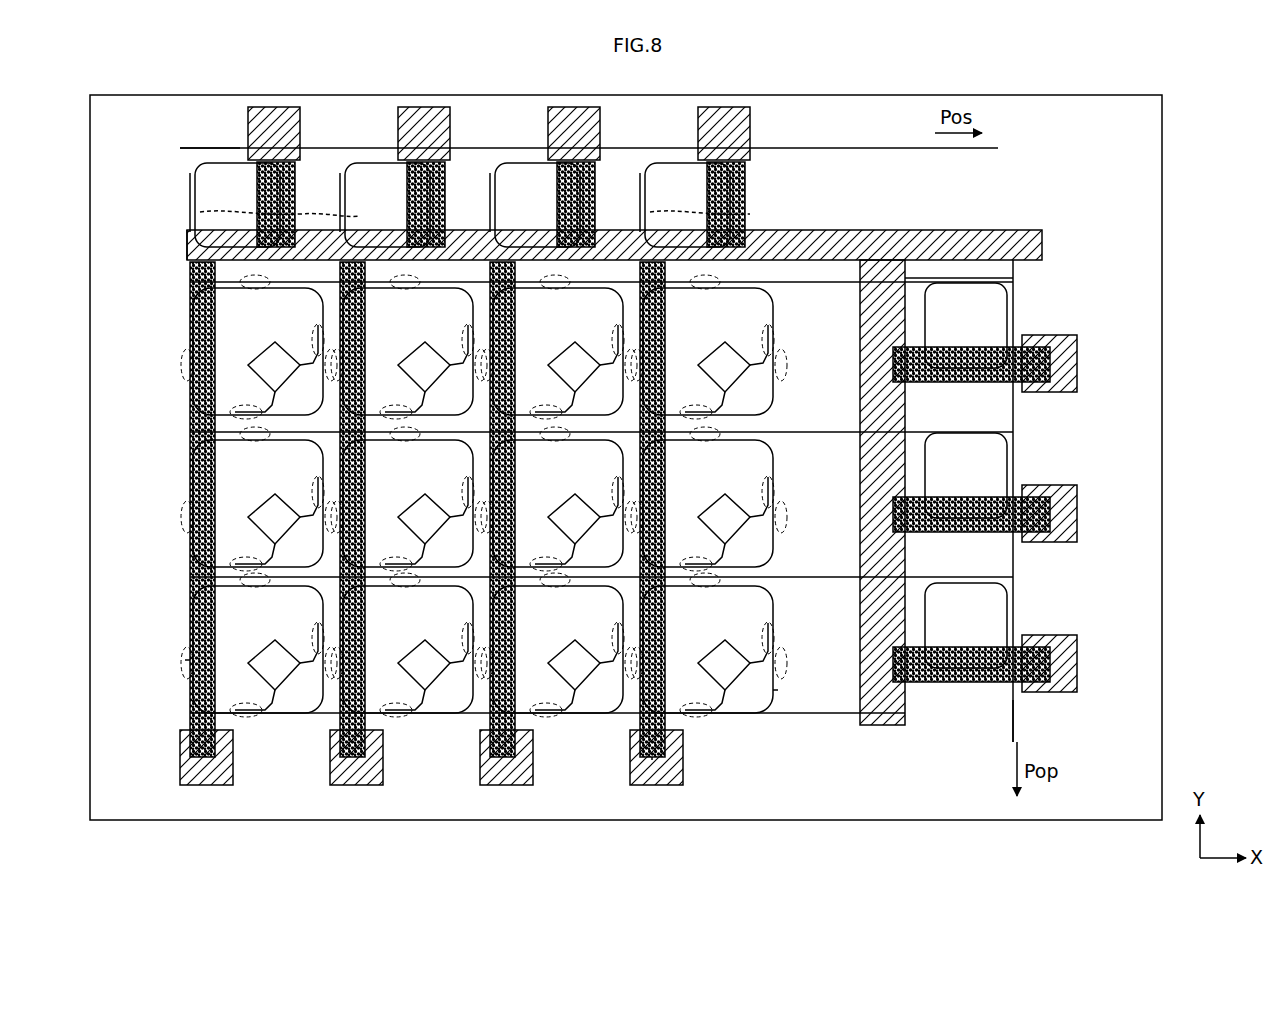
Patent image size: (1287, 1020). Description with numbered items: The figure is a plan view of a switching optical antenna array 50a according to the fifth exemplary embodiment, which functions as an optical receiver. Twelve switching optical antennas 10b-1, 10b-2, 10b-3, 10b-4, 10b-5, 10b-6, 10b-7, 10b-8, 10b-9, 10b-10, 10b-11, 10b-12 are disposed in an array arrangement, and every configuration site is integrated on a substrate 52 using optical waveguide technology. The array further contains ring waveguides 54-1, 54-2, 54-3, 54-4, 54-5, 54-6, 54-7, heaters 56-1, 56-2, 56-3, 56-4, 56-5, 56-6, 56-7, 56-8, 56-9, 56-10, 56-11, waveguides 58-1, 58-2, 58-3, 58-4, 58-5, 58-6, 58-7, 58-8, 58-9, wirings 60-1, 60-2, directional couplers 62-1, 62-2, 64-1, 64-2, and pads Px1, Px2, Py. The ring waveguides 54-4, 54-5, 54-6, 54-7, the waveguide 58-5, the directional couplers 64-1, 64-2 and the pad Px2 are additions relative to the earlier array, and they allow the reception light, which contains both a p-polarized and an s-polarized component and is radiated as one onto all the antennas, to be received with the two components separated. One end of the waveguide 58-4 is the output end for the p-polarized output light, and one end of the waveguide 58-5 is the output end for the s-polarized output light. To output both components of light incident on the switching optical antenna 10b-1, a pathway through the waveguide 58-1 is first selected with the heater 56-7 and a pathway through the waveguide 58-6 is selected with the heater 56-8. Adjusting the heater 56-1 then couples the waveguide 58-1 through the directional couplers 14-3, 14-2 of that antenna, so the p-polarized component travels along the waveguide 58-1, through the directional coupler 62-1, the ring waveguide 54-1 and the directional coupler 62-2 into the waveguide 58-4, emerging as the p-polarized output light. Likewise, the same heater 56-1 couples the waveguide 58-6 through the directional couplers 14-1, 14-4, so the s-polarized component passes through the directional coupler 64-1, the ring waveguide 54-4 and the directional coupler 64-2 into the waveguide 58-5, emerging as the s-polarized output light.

The substrate 52 is at (712, 820).
The switching optical antenna array 50a is at (880, 66).
The switching optical antenna 10b-1 is at (259, 347).
The switching optical antenna 10b-2 is at (259, 499).
The switching optical antenna 10b-3 is at (259, 645).
The switching optical antenna 10b-4 is at (409, 347).
The switching optical antenna 10b-5 is at (409, 499).
The switching optical antenna 10b-6 is at (409, 645).
The switching optical antenna 10b-7 is at (559, 347).
The switching optical antenna 10b-8 is at (559, 499).
The switching optical antenna 10b-9 is at (559, 645).
The switching optical antenna 10b-10 is at (709, 347).
The switching optical antenna 10b-11 is at (709, 499).
The switching optical antenna 10b-12 is at (709, 645).
The directional coupler 14-1 is at (668, 742).
The directional coupler 14-2 is at (720, 568).
The directional coupler 14-3 is at (770, 700).
The directional coupler 14-4 is at (188, 662).
The ring waveguide 54-1 is at (966, 325).
The ring waveguide 54-2 is at (966, 475).
The ring waveguide 54-3 is at (966, 625).
The ring waveguide 54-4 is at (237, 205).
The ring waveguide 54-5 is at (387, 205).
The ring waveguide 54-6 is at (537, 205).
The ring waveguide 54-7 is at (687, 205).
The heater 56-1 is at (195, 730).
The heater 56-2 is at (345, 730).
The heater 56-3 is at (495, 730).
The heater 56-4 is at (645, 730).
The heater 56-5 is at (965, 684).
The heater 56-6 is at (950, 534).
The heater 56-7 is at (950, 384).
The heater 56-8 is at (258, 200).
The heater 56-9 is at (200, 212).
The heater 56-10 is at (745, 192).
The heater 56-11 is at (750, 214).
The waveguide 58-1 is at (822, 284).
The waveguide 58-2 is at (822, 434).
The waveguide 58-3 is at (822, 579).
The waveguide 58-4 is at (1020, 718).
The waveguide 58-5 is at (910, 152).
The waveguide 58-6 is at (190, 186).
The waveguide 58-7 is at (340, 175).
The waveguide 58-8 is at (490, 175).
The waveguide 58-9 is at (640, 175).
The wiring 60-1 is at (968, 230).
The wiring 60-2 is at (885, 727).
The directional coupler 62-1 is at (1015, 270).
The directional coupler 62-2 is at (1015, 302).
The directional coupler 64-1 is at (185, 245).
The directional coupler 64-2 is at (215, 150).
The pad Px1 is at (630, 765).
The pad Px2 is at (697, 122).
The pad Py is at (1080, 362).